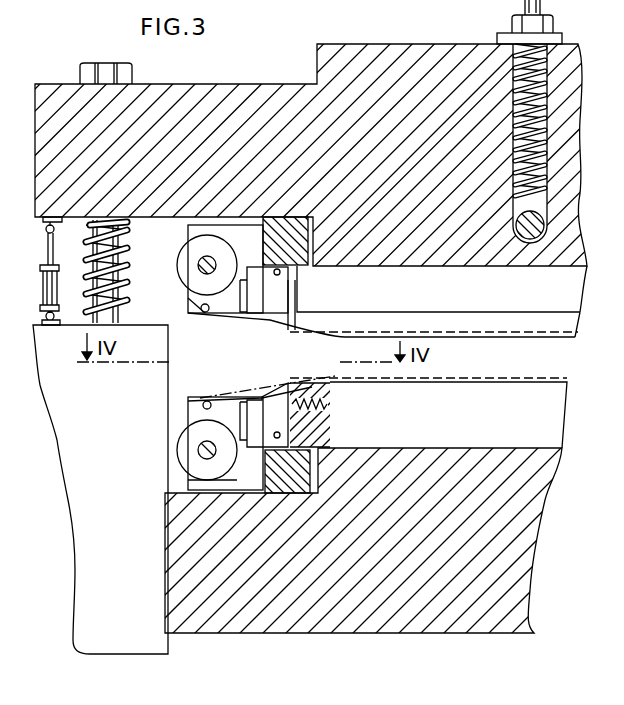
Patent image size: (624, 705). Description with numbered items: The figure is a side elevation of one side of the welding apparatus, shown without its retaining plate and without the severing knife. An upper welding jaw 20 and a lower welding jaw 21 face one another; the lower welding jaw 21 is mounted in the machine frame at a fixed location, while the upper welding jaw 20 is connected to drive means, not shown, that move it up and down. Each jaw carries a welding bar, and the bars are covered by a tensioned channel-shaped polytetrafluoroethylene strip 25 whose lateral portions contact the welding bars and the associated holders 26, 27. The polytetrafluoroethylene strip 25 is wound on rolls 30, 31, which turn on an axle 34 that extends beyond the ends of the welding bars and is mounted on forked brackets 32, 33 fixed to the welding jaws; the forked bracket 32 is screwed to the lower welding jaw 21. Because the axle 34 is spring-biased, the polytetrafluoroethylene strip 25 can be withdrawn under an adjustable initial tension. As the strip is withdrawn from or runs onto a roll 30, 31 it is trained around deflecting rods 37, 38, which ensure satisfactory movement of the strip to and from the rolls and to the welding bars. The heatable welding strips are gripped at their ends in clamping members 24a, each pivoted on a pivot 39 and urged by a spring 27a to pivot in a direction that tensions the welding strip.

The upper welding jaw 20 is at (260, 153).
The lower welding jaw 21 is at (420, 601).
The clamping member 24a is at (271, 305).
The polytetrafluoroethylene strip 25 is at (215, 319).
The holder 26 is at (462, 303).
The holder 27 is at (477, 435).
The spring 27a is at (330, 408).
The roll 30 is at (190, 479).
The roll 31 is at (177, 265).
The forked bracket 32 is at (251, 480).
The forked bracket 33 is at (222, 228).
The axle 34 is at (196, 452).
The deflecting rod 37 is at (200, 308).
The deflecting rod 38 is at (208, 401).
The pivot 39 is at (278, 269).